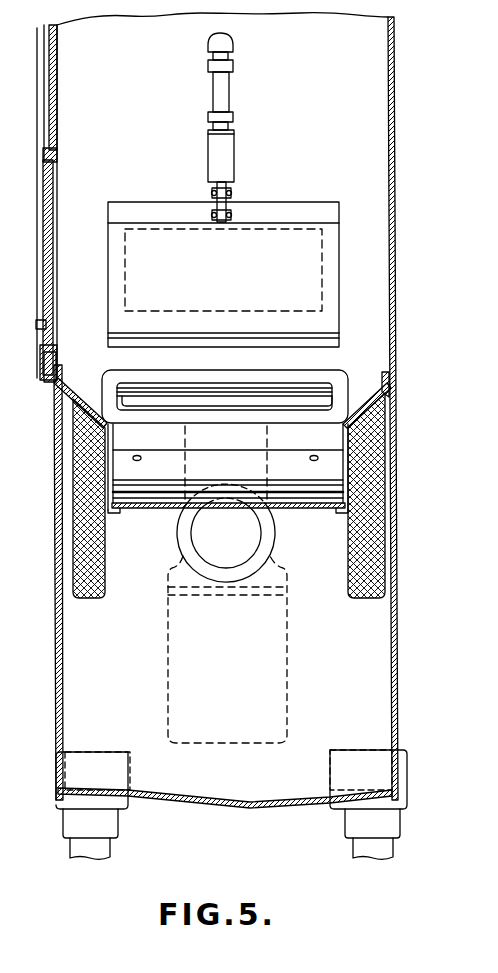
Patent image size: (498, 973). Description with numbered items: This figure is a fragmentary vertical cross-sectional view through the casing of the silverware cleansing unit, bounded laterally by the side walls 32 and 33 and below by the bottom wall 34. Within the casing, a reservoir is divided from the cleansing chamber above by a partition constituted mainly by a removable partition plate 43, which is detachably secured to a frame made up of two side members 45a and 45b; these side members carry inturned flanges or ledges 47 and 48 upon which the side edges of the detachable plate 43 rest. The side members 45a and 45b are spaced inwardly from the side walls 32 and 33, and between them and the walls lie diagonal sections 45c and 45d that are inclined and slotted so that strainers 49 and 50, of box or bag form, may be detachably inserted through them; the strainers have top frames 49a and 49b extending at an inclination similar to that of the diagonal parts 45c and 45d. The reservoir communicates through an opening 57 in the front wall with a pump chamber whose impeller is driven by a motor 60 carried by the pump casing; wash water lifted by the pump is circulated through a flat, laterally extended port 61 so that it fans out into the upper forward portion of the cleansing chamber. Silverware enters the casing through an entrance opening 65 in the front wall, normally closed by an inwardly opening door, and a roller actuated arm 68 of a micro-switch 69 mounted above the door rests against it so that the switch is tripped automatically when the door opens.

The side wall 32 is at (57, 634).
The side wall 33 is at (398, 648).
The bottom wall 34 is at (265, 803).
The partition plate 43 is at (283, 509).
The side member 45a is at (113, 466).
The side member 45b is at (343, 455).
The diagonal section 45c is at (58, 402).
The diagonal section 45d is at (392, 392).
The inturned flange 47 is at (127, 512).
The inturned flange 48 is at (317, 509).
The strainer 49 is at (74, 536).
The top frame 49a is at (76, 400).
The top frame 49b is at (370, 392).
The strainer 50 is at (372, 543).
The opening 57 is at (199, 562).
The motor 60 is at (290, 675).
The port 61 is at (246, 402).
The entrance opening 65 is at (234, 281).
The roller actuated arm 68 is at (229, 207).
The micro-switch 69 is at (221, 102).